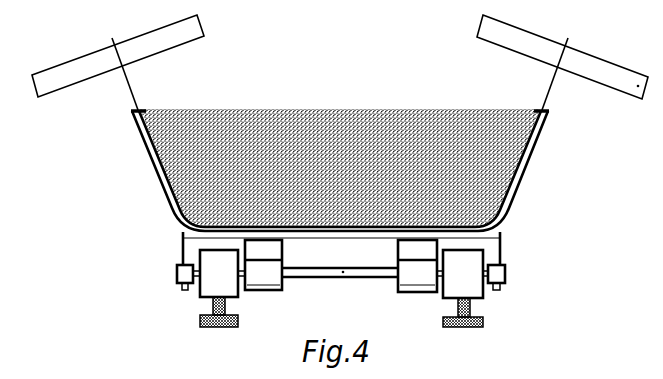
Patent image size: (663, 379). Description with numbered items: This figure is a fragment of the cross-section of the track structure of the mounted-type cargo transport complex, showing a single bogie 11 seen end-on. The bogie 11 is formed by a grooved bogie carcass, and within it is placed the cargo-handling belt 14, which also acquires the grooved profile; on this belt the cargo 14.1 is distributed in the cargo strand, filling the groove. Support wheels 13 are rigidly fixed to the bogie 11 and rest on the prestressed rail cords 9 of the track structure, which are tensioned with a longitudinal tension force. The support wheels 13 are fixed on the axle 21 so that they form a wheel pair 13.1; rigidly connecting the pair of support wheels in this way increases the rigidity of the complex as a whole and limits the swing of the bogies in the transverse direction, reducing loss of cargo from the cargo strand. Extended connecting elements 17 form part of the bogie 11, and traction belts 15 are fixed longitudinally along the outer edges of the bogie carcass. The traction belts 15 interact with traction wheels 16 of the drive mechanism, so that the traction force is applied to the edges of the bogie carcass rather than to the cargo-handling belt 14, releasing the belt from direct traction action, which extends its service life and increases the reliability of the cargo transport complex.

The rail cord 9 is at (200, 320).
The bogie 11 is at (170, 206).
The support wheel 13 is at (505, 282).
The wheel pair 13.1 is at (343, 272).
The cargo-handling belt 14 is at (175, 219).
The cargo 14.1 is at (140, 132).
The traction belt 15 is at (551, 85).
The traction wheel 16 is at (638, 87).
The connecting element 17 is at (177, 266).
The axle 21 is at (502, 262).